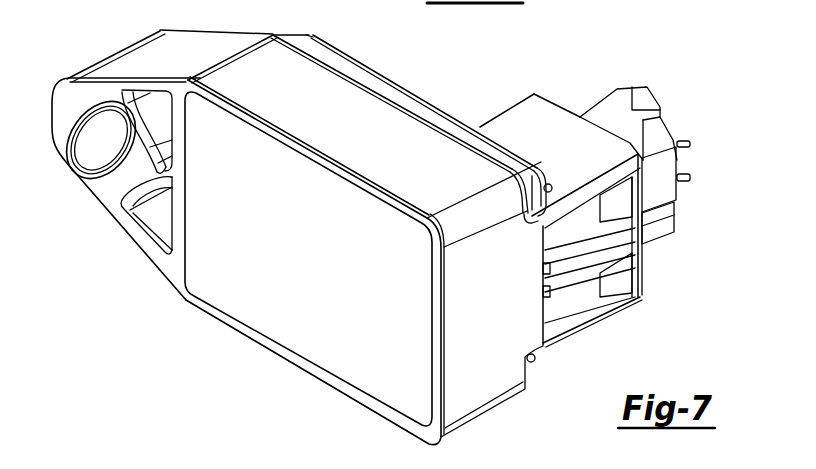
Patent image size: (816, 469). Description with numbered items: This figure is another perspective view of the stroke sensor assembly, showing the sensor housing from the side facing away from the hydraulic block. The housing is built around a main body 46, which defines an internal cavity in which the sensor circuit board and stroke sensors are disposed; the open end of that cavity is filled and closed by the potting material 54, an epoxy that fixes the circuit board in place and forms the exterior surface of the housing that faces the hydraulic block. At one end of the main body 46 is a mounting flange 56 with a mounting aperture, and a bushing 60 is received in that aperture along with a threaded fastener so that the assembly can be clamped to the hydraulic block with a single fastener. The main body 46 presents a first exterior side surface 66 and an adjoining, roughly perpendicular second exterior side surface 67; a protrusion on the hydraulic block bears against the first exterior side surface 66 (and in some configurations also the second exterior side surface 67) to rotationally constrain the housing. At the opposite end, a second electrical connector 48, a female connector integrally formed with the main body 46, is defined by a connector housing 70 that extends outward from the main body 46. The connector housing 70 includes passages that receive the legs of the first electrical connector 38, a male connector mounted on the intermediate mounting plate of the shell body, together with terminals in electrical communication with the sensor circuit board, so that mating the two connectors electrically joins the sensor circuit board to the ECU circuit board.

The first electrical connector 38 is at (663, 242).
The main body 46 is at (320, 43).
The second electrical connector 48 is at (540, 97).
The potting material 54 is at (307, 325).
The mounting flange 56 is at (120, 52).
The bushing 60 is at (101, 141).
The first exterior side surface 66 is at (347, 107).
The second exterior side surface 67 is at (458, 352).
The connector housing 70 is at (517, 127).